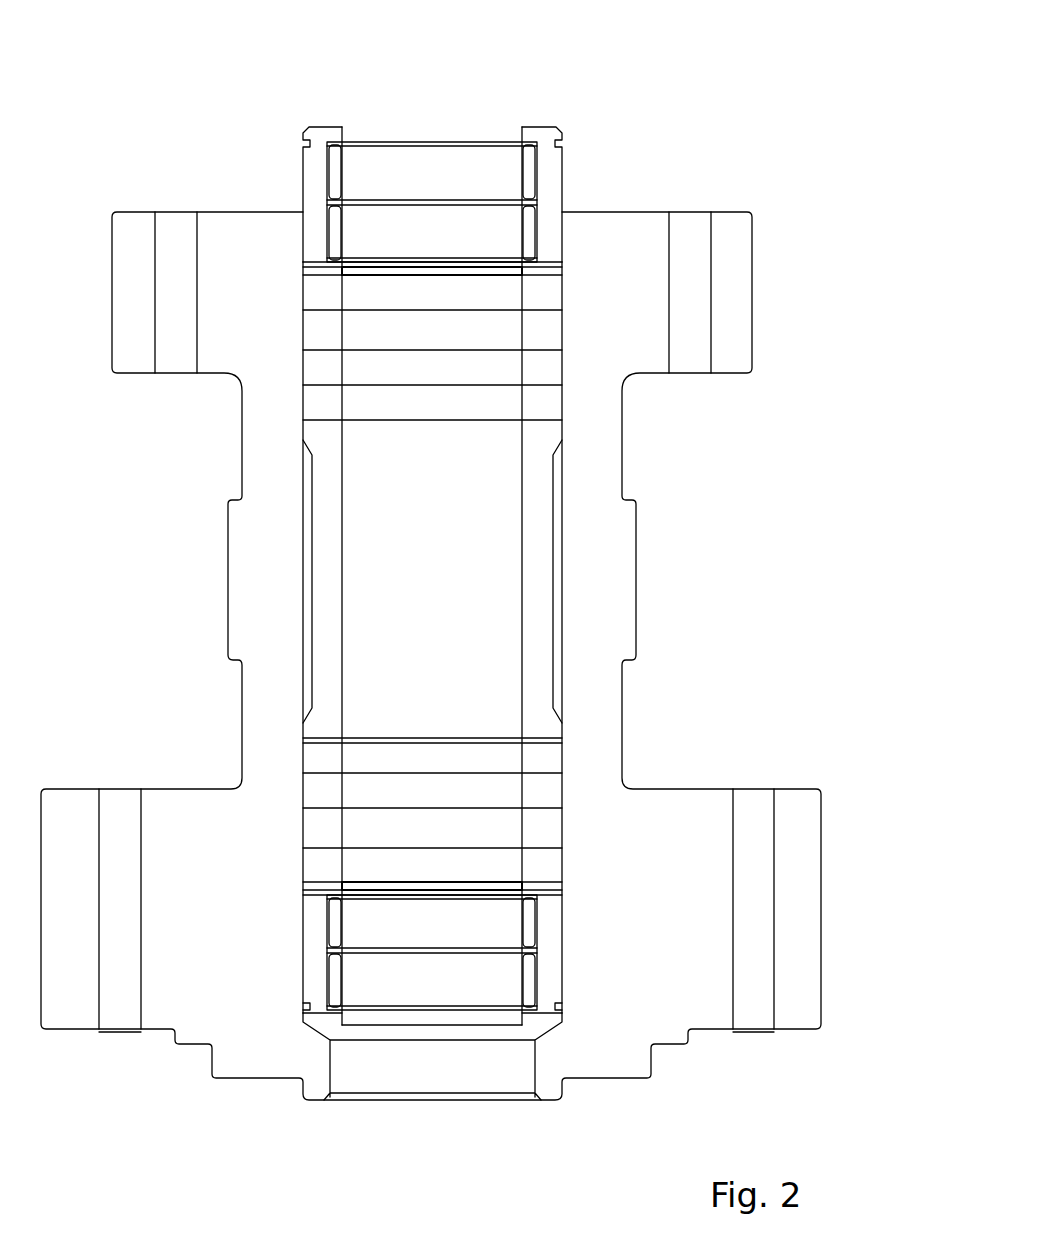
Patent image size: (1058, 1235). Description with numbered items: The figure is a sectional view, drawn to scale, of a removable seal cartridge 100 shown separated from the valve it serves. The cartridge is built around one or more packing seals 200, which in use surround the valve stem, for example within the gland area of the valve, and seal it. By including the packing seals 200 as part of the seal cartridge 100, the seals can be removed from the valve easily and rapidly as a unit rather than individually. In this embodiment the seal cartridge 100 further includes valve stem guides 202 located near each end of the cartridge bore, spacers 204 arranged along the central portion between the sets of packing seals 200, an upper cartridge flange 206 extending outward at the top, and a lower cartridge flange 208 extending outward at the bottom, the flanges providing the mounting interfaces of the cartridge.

The seal cartridge 100 is at (690, 97).
The packing seals 200 is at (562, 292).
The valve stem guides 202 is at (562, 166).
The spacers 204 is at (522, 495).
The upper cartridge flange 206 is at (752, 258).
The lower cartridge flange 208 is at (822, 840).